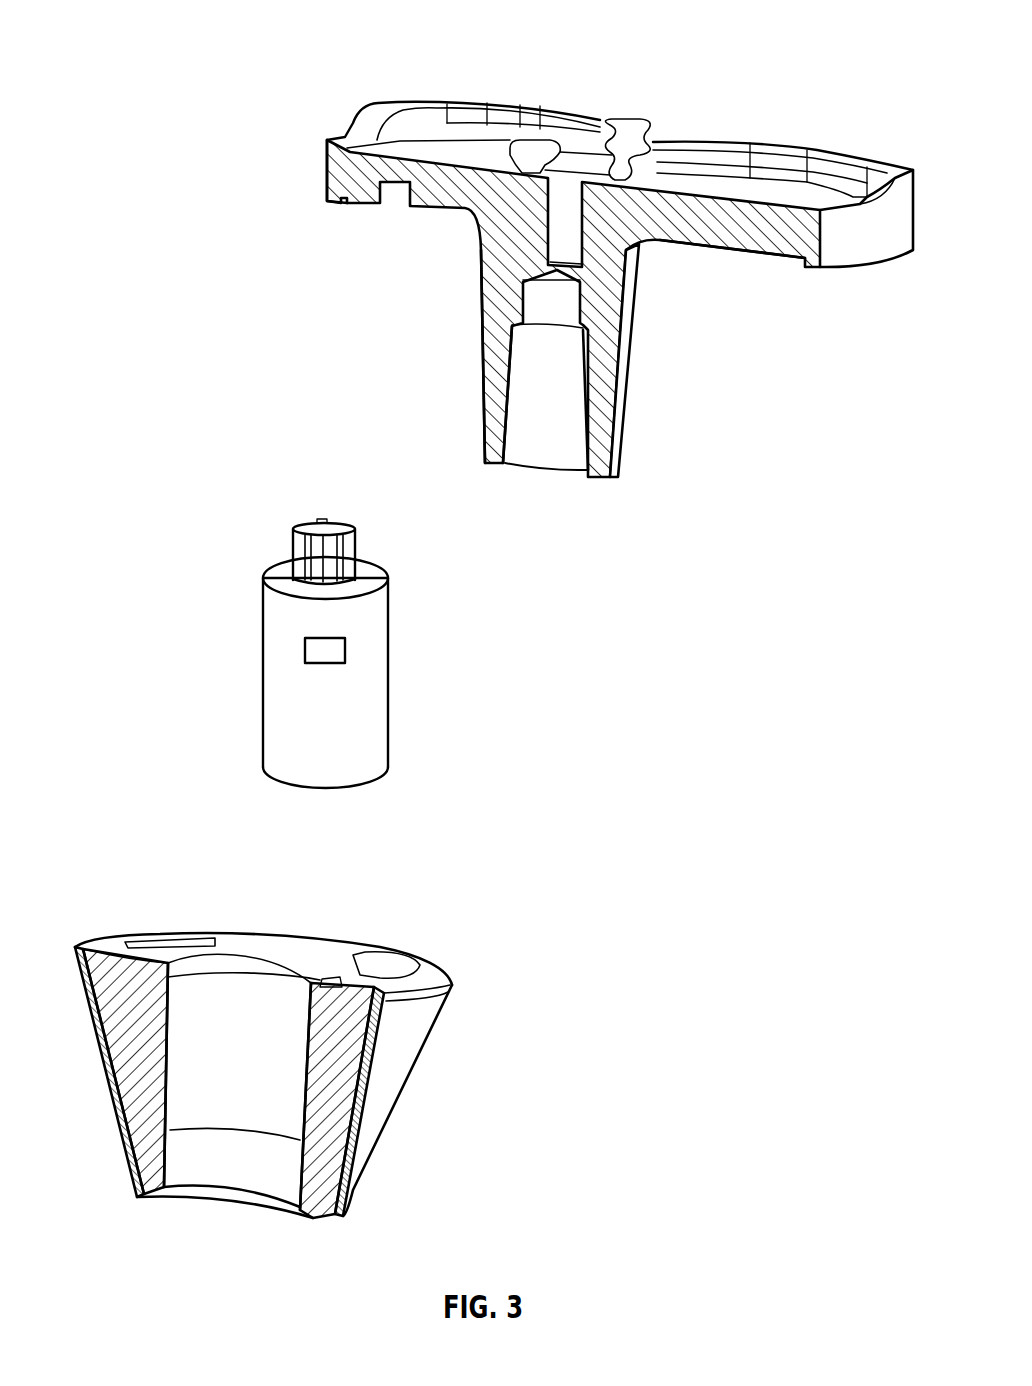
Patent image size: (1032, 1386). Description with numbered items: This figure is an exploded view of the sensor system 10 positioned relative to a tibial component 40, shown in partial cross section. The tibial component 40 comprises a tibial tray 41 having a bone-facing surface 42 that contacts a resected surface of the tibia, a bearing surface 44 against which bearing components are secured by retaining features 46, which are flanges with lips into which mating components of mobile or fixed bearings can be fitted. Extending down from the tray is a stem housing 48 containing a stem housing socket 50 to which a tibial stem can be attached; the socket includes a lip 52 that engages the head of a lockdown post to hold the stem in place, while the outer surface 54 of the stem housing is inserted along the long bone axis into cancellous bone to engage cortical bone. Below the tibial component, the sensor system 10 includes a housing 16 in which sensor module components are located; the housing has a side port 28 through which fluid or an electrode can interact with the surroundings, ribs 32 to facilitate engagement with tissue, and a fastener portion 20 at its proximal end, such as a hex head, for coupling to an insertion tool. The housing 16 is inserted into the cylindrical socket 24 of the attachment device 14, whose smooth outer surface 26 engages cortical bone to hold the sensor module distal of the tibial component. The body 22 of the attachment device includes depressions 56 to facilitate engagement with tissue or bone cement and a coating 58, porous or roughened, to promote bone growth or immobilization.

The sensor system 10 is at (353, 651).
The attachment device 14 is at (256, 1037).
The housing 16 is at (373, 736).
The fastener portion 20 is at (316, 549).
The body 22 is at (268, 940).
The socket 24 is at (195, 1070).
The outer surface 26 is at (415, 1035).
The side port 28 is at (305, 652).
The ribs 32 is at (338, 560).
The tibial component 40 is at (584, 246).
The tibial tray 41 is at (322, 195).
The bone-facing surface 42 is at (760, 258).
The bearing surface 44 is at (755, 190).
The retaining features 46 is at (622, 120).
The stem housing 48 is at (487, 350).
The stem housing socket 50 is at (513, 428).
The lip 52 is at (585, 330).
The outer surface 54 is at (622, 360).
The depressions 56 is at (170, 945).
The coating 58 is at (110, 1080).